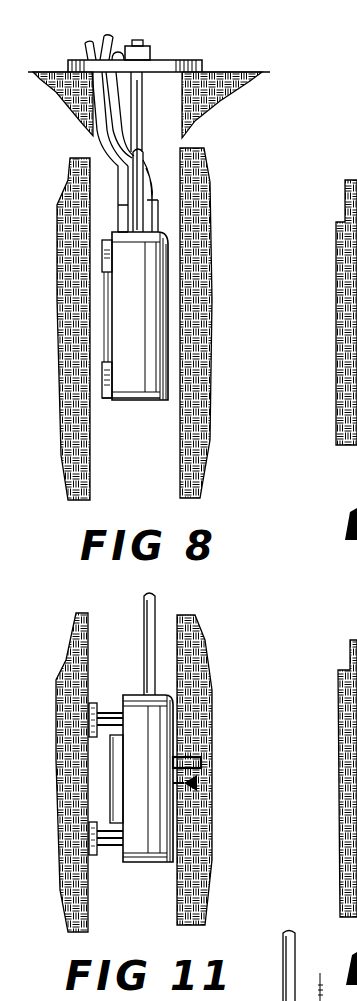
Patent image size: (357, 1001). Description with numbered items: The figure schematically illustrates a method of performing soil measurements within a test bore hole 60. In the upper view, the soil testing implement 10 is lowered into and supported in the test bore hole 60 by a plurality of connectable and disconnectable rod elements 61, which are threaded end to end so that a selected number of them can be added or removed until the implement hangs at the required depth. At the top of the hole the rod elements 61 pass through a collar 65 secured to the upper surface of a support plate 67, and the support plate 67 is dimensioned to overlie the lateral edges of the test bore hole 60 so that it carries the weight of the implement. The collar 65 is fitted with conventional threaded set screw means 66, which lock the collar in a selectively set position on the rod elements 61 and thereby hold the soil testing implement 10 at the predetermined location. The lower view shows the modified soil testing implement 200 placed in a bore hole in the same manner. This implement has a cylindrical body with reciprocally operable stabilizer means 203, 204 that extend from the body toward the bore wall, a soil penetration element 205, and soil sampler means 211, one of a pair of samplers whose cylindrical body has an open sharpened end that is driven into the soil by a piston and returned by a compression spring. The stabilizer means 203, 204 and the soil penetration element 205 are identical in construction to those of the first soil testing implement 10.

In FIG. 8, the soil testing implement 10 is at (150, 298).
In FIG. 8, the test bore hole 60 is at (176, 450).
In FIG. 8, the rod elements 61 is at (142, 119).
In FIG. 8, the collar 65 is at (150, 55).
In FIG. 8, the threaded set screw means 66 is at (112, 56).
In FIG. 8, the support plate 67 is at (198, 64).
In FIG. 11, the modified soil testing implement 200 is at (162, 729).
In FIG. 11, the stabilizer means 203 is at (106, 712).
In FIG. 11, the stabilizer means 204 is at (98, 850).
In FIG. 11, the soil penetration element 205 is at (196, 786).
In FIG. 11, the soil sampler means 211 is at (192, 759).